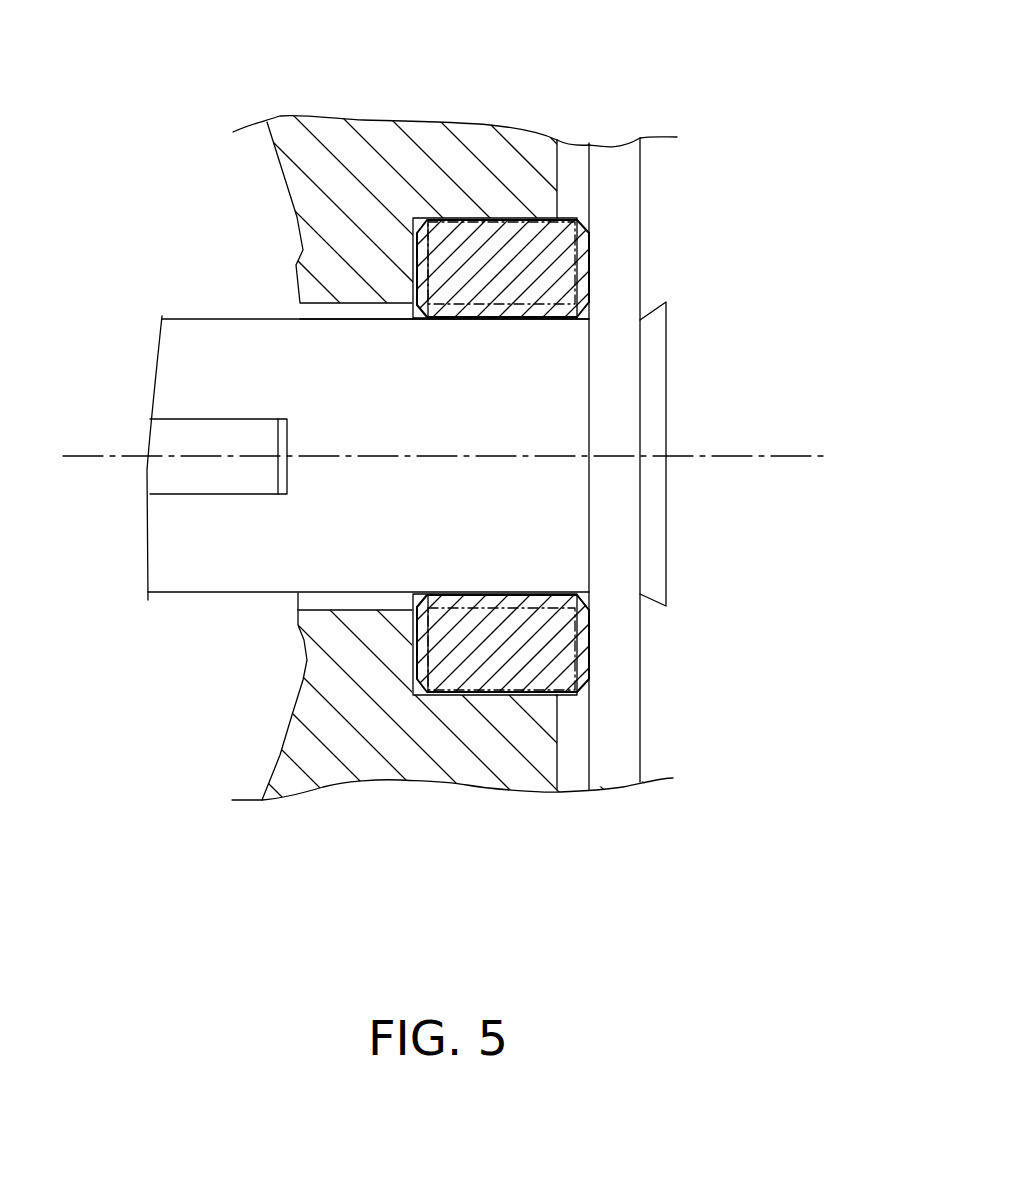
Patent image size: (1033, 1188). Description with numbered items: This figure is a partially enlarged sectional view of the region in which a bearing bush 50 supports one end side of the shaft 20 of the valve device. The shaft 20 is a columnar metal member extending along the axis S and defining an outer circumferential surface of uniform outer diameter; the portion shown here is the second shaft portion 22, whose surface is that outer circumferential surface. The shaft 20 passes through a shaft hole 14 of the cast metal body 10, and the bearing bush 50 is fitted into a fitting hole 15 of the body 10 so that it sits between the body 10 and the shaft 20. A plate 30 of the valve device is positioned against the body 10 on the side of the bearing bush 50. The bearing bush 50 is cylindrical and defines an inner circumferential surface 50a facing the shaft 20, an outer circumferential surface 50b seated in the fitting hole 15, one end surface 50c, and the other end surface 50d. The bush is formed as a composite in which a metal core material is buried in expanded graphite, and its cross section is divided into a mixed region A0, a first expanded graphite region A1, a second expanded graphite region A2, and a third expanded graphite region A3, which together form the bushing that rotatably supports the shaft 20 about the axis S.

The body 10 is at (557, 168).
The shaft hole 14 is at (298, 600).
The fitting hole 15 is at (408, 212).
The shaft 20 is at (215, 317).
The second shaft portion 22 is at (530, 481).
The plate 30 is at (640, 195).
The bearing bush 50 is at (500, 215).
The inner circumferential surface 50a is at (510, 320).
The outer circumferential surface 50b is at (470, 215).
The one end surface 50c is at (588, 268).
The other end surface 50d is at (413, 268).
The axis S is at (107, 458).
The mixed region A0 is at (492, 692).
The first expanded graphite region A1 is at (590, 596).
The second expanded graphite region A2 is at (590, 647).
The third expanded graphite region A3 is at (418, 652).